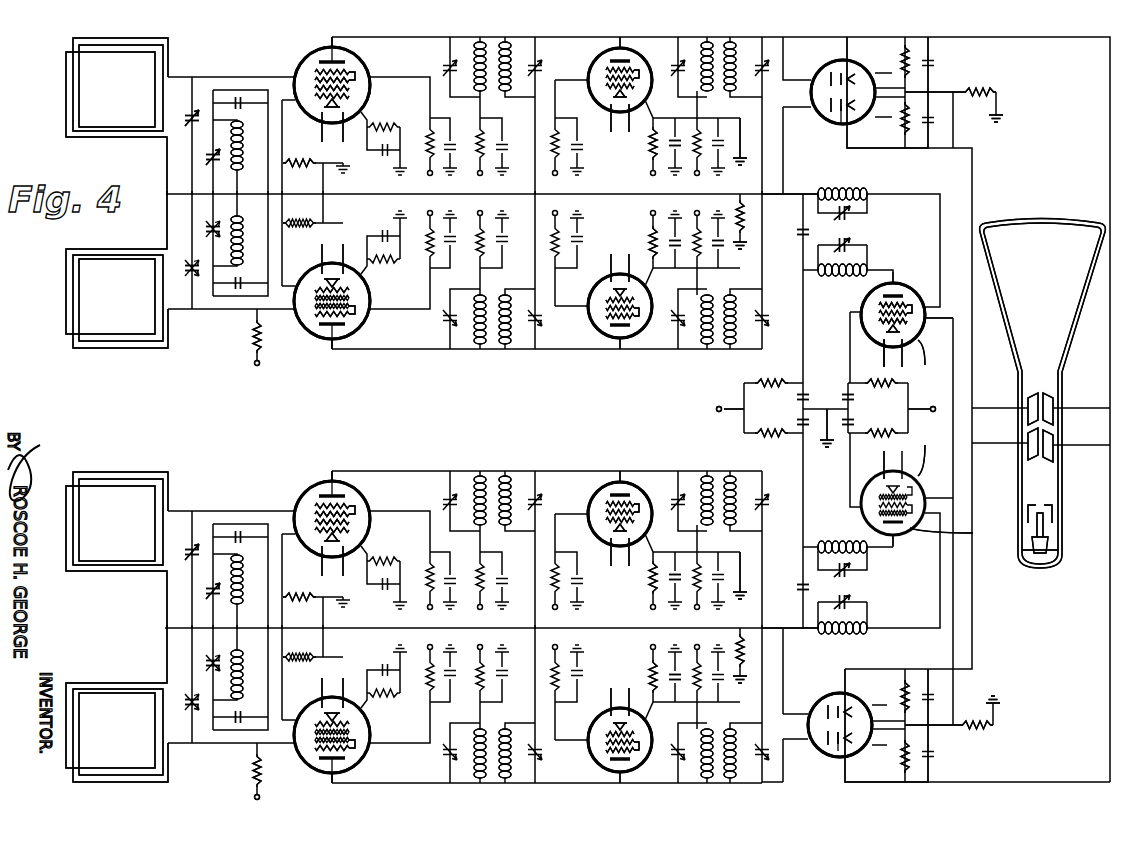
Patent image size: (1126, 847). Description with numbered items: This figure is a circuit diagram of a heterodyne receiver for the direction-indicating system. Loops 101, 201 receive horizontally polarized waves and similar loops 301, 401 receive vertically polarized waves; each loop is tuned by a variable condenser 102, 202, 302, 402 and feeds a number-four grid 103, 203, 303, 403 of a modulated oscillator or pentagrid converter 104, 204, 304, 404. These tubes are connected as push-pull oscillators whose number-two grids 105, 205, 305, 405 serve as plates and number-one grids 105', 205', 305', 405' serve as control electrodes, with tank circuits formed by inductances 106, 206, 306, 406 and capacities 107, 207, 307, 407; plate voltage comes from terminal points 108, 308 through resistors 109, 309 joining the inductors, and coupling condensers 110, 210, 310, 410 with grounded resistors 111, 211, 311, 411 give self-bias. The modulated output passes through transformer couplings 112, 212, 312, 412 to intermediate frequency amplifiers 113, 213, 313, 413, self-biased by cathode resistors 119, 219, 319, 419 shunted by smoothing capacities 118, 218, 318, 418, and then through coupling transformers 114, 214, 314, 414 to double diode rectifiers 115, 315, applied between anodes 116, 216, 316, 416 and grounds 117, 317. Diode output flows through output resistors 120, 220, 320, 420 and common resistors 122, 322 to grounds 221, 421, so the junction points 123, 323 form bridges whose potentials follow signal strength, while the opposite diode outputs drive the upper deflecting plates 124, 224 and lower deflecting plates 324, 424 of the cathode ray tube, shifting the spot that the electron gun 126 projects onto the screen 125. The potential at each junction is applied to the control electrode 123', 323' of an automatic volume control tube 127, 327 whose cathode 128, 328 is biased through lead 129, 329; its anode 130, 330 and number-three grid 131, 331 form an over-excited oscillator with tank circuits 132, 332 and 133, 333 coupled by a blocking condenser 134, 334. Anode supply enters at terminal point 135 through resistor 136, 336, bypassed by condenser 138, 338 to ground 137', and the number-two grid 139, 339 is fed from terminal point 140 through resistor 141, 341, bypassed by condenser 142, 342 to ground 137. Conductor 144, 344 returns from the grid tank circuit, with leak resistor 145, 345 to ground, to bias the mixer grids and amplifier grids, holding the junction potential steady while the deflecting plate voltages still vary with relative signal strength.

The loop 101 is at (72, 75).
The variable condenser 102 is at (190, 116).
The No. 4 grid 103 is at (312, 62).
The modulated oscillator 104 is at (360, 56).
The No. 2 grid 105 is at (360, 88).
The No. 1 grid 105' is at (362, 100).
The inductance element 106 is at (241, 145).
The capacity element 107 is at (206, 157).
The blocking or coupling condenser 110 is at (240, 110).
The resistor 111 is at (300, 158).
The transformer coupling 112 is at (487, 40).
The intermediate frequency amplifier 113 is at (606, 55).
The coupling transformer 114 is at (722, 40).
The double diode rectifier 115 is at (898, 55).
The anode electrode 116 is at (813, 75).
The ground 117 is at (741, 166).
The capacity element 118 is at (678, 135).
The resistor element 119 is at (650, 145).
The output resistor 120 is at (903, 45).
The common resistor 122 is at (975, 90).
The junction point 123 is at (937, 77).
The anode electrode 216 is at (828, 112).
The output resistor 220 is at (903, 125).
The ground 221 is at (1000, 117).
The conductor 144 is at (790, 190).
The tank circuit 133 is at (867, 210).
The blocking condenser 134 is at (812, 232).
The tank circuit 132 is at (867, 260).
The plate or anode electrode 130 is at (898, 283).
The No. 3 grid 131 is at (870, 296).
The No. 2 grid 139 is at (861, 305).
The automatic volume control tube 127 is at (862, 325).
The cathode 128 is at (882, 345).
The conductor or lead 129 is at (926, 345).
The control electrode 123' is at (944, 326).
The target or screen 125 is at (1040, 223).
The deflecting plate 224 is at (1028, 418).
The deflecting plate 124 is at (1053, 418).
The deflecting plate 424 is at (1028, 450).
The deflecting plate 324 is at (1053, 450).
The electron gun structure 126 is at (1052, 513).
The resistor 136 is at (768, 380).
The condenser 138 is at (800, 400).
The condenser 338 is at (808, 420).
The resistor 141 is at (898, 383).
The condenser 142 is at (852, 400).
The condenser 342 is at (852, 422).
The resistor 341 is at (882, 433).
The terminal point 135 is at (716, 410).
The terminal point 140 is at (936, 410).
The ground 137' is at (814, 429).
The conductor or lead 329 is at (926, 462).
The cathode 328 is at (872, 478).
The control electrode 323' is at (858, 492).
The No. 3 grid 331 is at (875, 515).
The No. 2 grid 339 is at (912, 495).
The automatic volume control tube 327 is at (960, 535).
The plate or anode electrode 330 is at (896, 545).
The tank circuit 332 is at (867, 565).
The blocking condenser 334 is at (812, 587).
The tank circuit 333 is at (867, 612).
The conductor 344 is at (790, 630).
The output resistor 320 is at (900, 672).
The double diode rectifier 315 is at (903, 685).
The anode electrode 316 is at (815, 710).
The anode electrode 416 is at (822, 748).
The output resistor 420 is at (903, 760).
The junction point 323 is at (938, 737).
The common resistor 322 is at (985, 730).
The ground 421 is at (1000, 700).
The loop 201 is at (70, 287).
The variable condenser 202 is at (190, 272).
The No. 4 grid 203 is at (305, 320).
The modulated oscillator 204 is at (366, 318).
The No. 2 grid 205 is at (360, 298).
The No. 1 grid 205' is at (359, 285).
The inductance element 206 is at (228, 248).
The capacity element 207 is at (206, 230).
The blocking or coupling condenser 210 is at (238, 292).
The resistor 211 is at (312, 221).
The transformer coupling 212 is at (490, 346).
The intermediate frequency amplifier 213 is at (606, 337).
The coupling transformer 214 is at (715, 346).
The terminal point 108 is at (260, 364).
The resistor 109 is at (260, 335).
The resistor element 219 is at (650, 240).
The capacity element 218 is at (676, 250).
The ground 137 is at (713, 259).
The resistor 145 is at (742, 248).
The loop 301 is at (72, 512).
The variable condenser 302 is at (190, 550).
The No. 4 grid 303 is at (312, 500).
The modulated oscillator 304 is at (358, 492).
The No. 2 grid 305 is at (360, 524).
The No. 1 grid 305' is at (362, 535).
The inductance element 306 is at (241, 575).
The capacity element 307 is at (206, 591).
The blocking or coupling condenser 310 is at (242, 533).
The resistor 311 is at (292, 597).
The transformer coupling 312 is at (487, 474).
The intermediate frequency amplifier 313 is at (606, 488).
The coupling transformer 314 is at (722, 474).
The ground 317 is at (741, 600).
The capacity element 318 is at (678, 570).
The resistor element 319 is at (650, 580).
The resistor 336 is at (770, 437).
The loop 401 is at (112, 688).
The variable condenser 402 is at (190, 706).
The No. 4 grid 403 is at (305, 752).
The modulated oscillator 404 is at (366, 755).
The No. 2 grid 405 is at (360, 733).
The No. 1 grid 405' is at (360, 719).
The inductance element 406 is at (228, 682).
The capacity element 407 is at (206, 664).
The blocking or coupling condenser 410 is at (237, 722).
The resistor 411 is at (290, 656).
The transformer coupling 412 is at (487, 779).
The intermediate frequency amplifier 413 is at (606, 772).
The coupling transformer 414 is at (715, 779).
The capacity element 418 is at (676, 684).
The resistor element 419 is at (650, 675).
The resistor 345 is at (744, 682).
The terminal point 308 is at (260, 798).
The resistor 309 is at (260, 775).